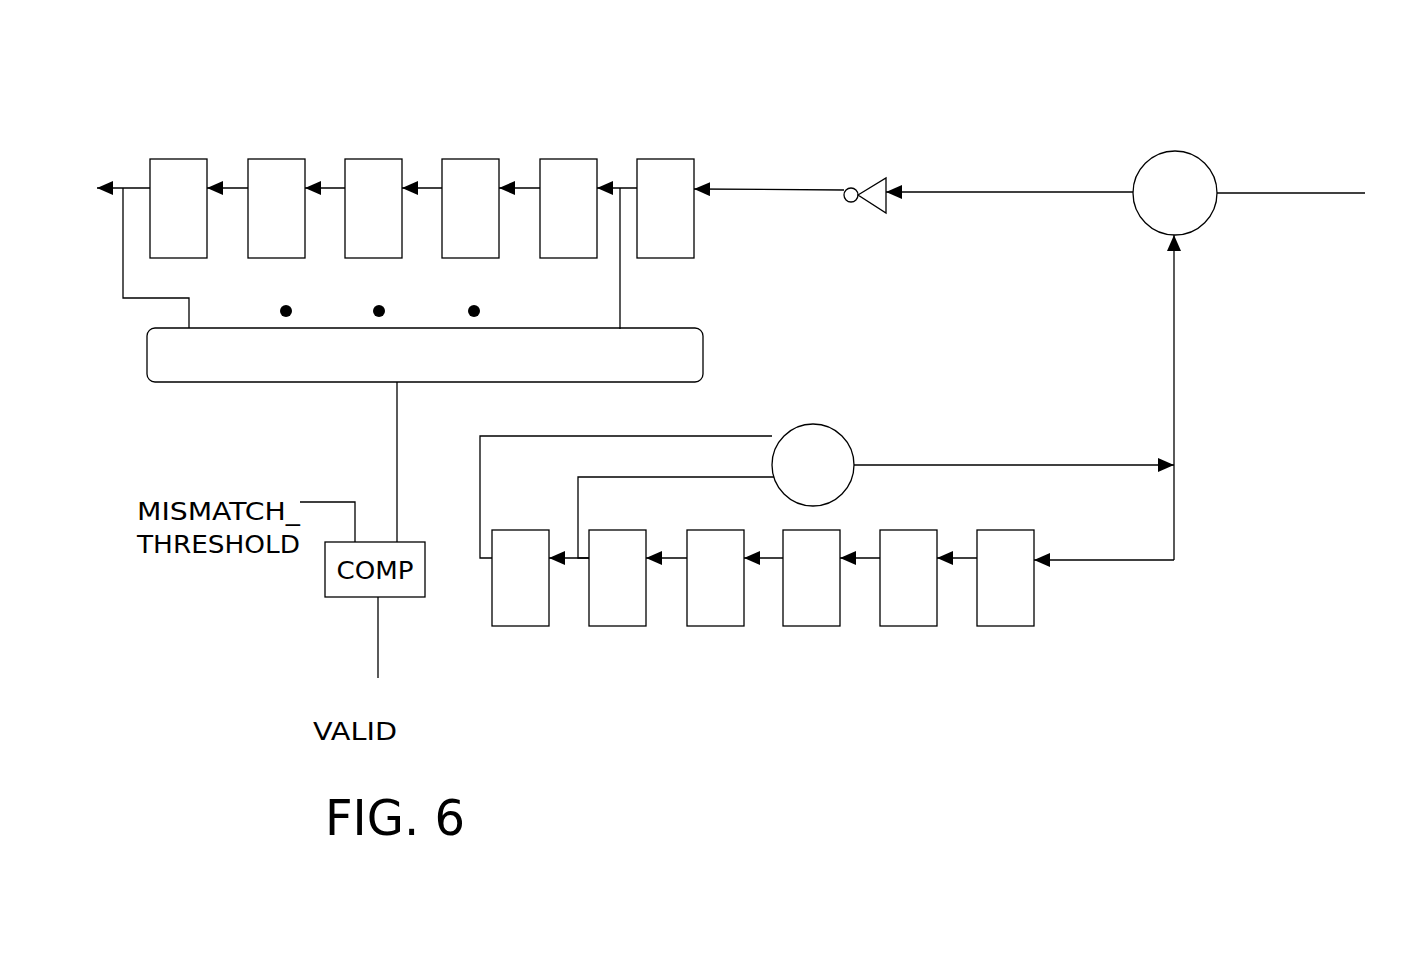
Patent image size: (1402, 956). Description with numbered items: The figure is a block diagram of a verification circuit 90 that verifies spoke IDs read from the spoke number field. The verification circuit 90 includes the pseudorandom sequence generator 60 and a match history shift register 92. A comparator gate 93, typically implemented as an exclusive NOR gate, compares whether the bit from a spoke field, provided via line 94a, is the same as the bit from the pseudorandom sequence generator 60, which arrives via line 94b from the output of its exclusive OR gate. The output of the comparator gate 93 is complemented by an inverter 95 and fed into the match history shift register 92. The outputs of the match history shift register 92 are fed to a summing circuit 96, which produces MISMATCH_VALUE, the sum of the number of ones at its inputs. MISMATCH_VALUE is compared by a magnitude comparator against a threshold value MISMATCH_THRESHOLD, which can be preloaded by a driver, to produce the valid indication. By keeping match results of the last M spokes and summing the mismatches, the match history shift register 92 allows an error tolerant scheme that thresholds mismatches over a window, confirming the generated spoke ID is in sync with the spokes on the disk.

The verification circuit 90 is at (233, 128).
The match history shift register 92 is at (432, 145).
The comparator gate 93 is at (1200, 237).
The line 94a is at (1272, 193).
The line 94b is at (1174, 387).
The inverter 95 is at (860, 177).
The summing circuit 96 is at (146, 368).
The pseudorandom sequence generator 60 is at (740, 655).